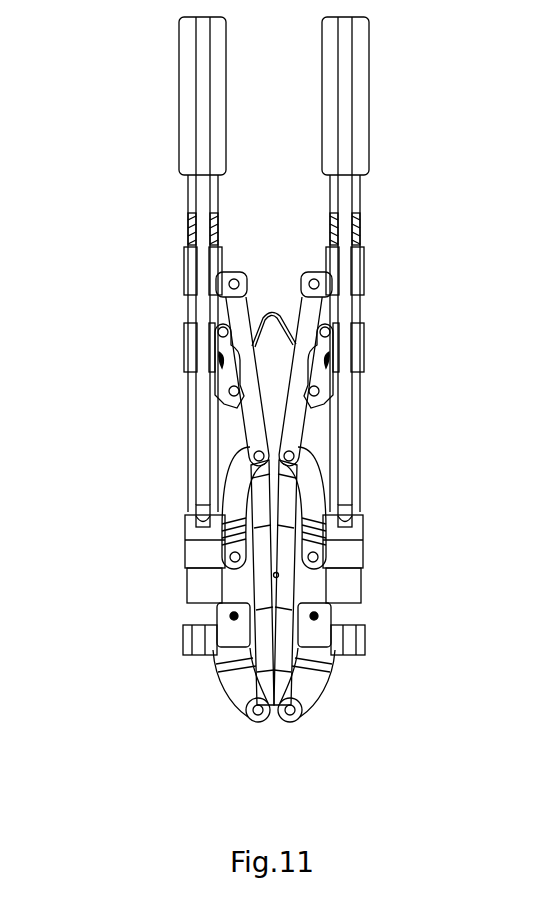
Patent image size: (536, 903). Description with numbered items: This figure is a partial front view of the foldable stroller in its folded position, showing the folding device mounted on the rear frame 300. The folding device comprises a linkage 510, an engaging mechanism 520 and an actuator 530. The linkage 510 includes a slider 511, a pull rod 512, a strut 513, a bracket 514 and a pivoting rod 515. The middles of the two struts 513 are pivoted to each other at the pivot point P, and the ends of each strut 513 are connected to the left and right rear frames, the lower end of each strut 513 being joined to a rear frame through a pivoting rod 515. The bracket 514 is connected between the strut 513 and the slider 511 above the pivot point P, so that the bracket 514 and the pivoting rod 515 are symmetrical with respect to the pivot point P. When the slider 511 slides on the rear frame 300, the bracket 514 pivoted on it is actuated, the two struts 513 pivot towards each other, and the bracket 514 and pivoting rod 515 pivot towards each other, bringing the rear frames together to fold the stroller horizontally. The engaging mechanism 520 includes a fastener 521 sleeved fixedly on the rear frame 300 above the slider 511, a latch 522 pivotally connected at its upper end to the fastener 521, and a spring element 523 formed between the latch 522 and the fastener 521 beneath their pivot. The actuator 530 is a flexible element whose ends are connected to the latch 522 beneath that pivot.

The rear frame 300 is at (193, 243).
The engaging mechanism 520 is at (207, 349).
The fastener 521 is at (193, 345).
The latch 522 is at (228, 391).
The spring element 523 is at (218, 362).
The actuator 530 is at (275, 318).
The linkage 510 is at (209, 497).
The slider 511 is at (196, 546).
The pull rod 512 is at (202, 462).
The strut 513 is at (270, 597).
The bracket 514 is at (232, 544).
The pivoting rod 515 is at (221, 685).
The pivot point P is at (278, 575).